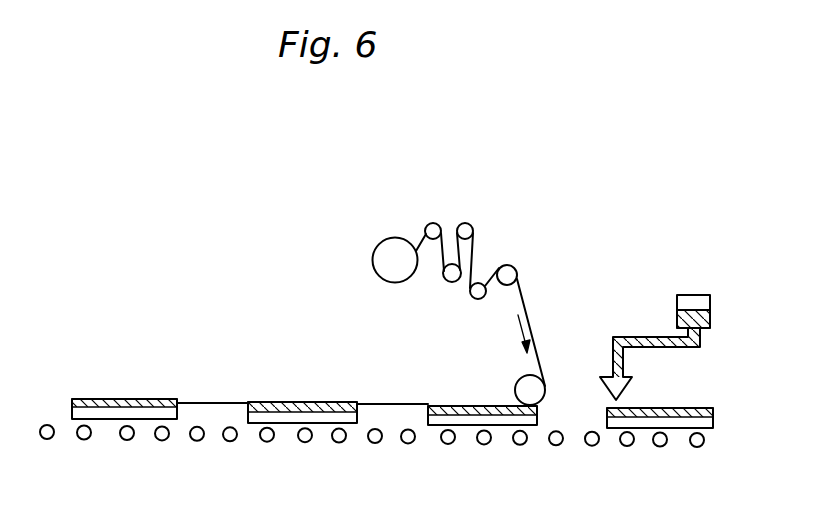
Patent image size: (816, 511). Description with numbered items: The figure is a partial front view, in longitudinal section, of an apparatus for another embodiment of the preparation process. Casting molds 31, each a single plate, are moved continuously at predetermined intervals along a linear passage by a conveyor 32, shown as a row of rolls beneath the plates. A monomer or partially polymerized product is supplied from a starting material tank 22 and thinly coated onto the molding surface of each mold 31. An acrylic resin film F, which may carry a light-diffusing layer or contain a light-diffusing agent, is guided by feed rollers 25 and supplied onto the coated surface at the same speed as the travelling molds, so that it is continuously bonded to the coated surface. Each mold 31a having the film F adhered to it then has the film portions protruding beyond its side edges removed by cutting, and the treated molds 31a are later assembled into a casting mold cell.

The starting material tank 22 is at (692, 294).
The feed rollers 25 is at (377, 216).
The casting mold 31 is at (643, 428).
The mold having the acrylic resin film adhered thereto 31a is at (143, 415).
The conveyor 32 is at (695, 447).
The acrylic resin film F is at (522, 287).